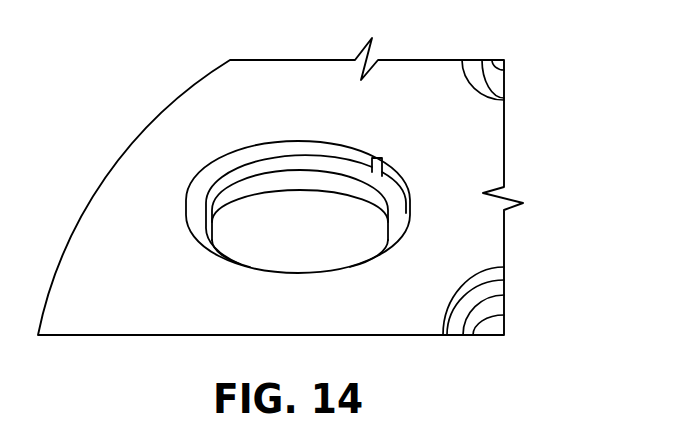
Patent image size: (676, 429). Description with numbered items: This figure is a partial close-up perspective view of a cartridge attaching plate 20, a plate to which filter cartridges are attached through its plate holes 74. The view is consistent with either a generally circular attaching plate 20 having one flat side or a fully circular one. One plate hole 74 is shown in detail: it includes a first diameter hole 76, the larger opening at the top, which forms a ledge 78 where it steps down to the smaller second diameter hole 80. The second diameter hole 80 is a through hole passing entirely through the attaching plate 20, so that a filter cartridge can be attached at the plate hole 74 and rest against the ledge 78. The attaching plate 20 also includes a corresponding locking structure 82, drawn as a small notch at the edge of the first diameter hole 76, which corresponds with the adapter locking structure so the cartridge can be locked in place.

The cartridge attaching plate 20 is at (480, 126).
The plate hole 74 is at (246, 206).
The first diameter hole 76 is at (259, 157).
The ledge 78 is at (201, 194).
The second diameter hole 80 is at (218, 246).
The corresponding locking structure 82 is at (385, 162).